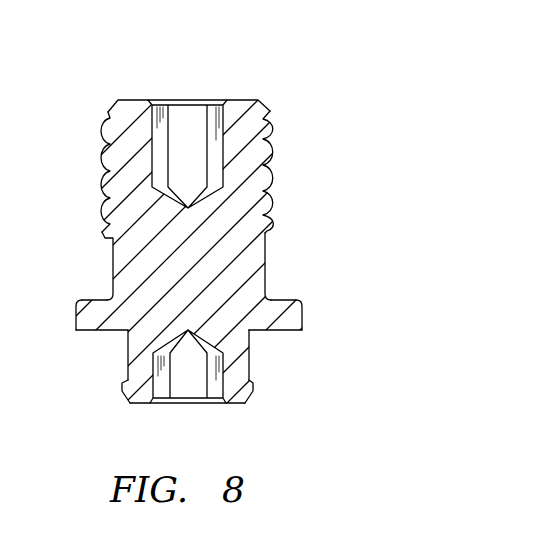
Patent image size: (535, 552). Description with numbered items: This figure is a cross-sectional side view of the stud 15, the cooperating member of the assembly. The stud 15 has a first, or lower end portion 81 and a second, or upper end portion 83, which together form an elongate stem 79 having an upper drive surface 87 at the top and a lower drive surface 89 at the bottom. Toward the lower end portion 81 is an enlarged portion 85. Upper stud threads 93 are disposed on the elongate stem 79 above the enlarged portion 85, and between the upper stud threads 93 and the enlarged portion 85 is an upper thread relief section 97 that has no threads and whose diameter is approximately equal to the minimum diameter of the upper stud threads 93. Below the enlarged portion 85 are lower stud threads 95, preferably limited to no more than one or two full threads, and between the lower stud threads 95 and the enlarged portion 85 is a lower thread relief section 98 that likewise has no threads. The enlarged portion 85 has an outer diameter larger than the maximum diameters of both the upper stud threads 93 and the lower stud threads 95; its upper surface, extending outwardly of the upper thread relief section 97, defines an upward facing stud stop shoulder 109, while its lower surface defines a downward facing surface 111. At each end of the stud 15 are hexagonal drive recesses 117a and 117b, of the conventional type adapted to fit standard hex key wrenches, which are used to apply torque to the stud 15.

The stud 15 is at (251, 79).
The elongate stem 79 is at (265, 252).
The lower end portion 81 is at (101, 368).
The upper end portion 83 is at (91, 122).
The enlarged portion 85 is at (302, 317).
The upper drive surface 87 is at (130, 100).
The lower drive surface 89 is at (142, 403).
The upper stud threads 93 is at (270, 130).
The lower stud threads 95 is at (125, 395).
The upper thread relief section 97 is at (113, 260).
The lower thread relief section 98 is at (249, 367).
The stud stop shoulder 109 is at (95, 302).
The downward facing surface 111 is at (88, 331).
The drive recess 117a is at (185, 116).
The drive recess 117b is at (189, 385).